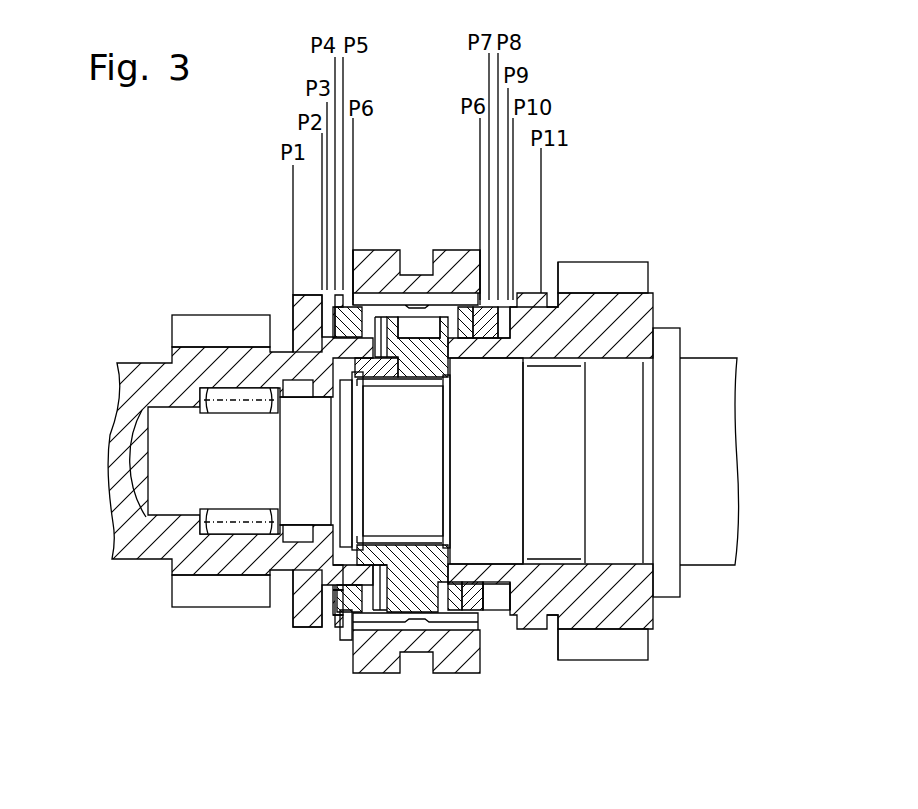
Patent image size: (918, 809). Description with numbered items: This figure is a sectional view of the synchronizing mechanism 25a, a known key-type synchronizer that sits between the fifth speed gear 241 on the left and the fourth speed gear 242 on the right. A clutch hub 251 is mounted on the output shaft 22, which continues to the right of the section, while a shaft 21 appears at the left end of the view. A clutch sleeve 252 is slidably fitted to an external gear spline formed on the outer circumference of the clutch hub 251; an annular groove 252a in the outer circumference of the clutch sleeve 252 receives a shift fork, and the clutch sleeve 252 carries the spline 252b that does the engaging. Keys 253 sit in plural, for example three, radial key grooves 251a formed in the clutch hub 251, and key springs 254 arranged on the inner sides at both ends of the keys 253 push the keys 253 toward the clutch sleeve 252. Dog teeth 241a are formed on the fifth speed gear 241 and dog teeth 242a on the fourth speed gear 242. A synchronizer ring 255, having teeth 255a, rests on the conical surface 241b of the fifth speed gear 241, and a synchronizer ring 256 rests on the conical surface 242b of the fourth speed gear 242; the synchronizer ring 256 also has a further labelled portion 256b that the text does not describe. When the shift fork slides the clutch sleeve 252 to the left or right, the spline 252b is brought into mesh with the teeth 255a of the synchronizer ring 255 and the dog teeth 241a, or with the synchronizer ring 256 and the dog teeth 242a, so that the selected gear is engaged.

The first rotation shaft 21 is at (120, 400).
The output shaft 22 is at (735, 410).
The fifth speed gear 241 is at (185, 320).
The dog teeth 241a is at (291, 302).
The conical surface 241b is at (353, 575).
The fourth speed gear 242 is at (612, 272).
The dog teeth 242a is at (558, 300).
The conical surface 242b is at (500, 580).
The synchronizing mechanism 25a is at (440, 245).
The clutch hub 251 is at (415, 603).
The key grooves 251a is at (505, 330).
The clutch sleeve 252 is at (394, 322).
The annular groove 252a is at (520, 305).
The spline 252b is at (340, 630).
The keys 253 is at (385, 318).
The key springs 254 is at (365, 628).
The synchronizer ring 255 is at (340, 620).
The teeth 255a is at (337, 613).
The synchronizer ring 256 is at (487, 617).
The ring portion 256b is at (490, 625).